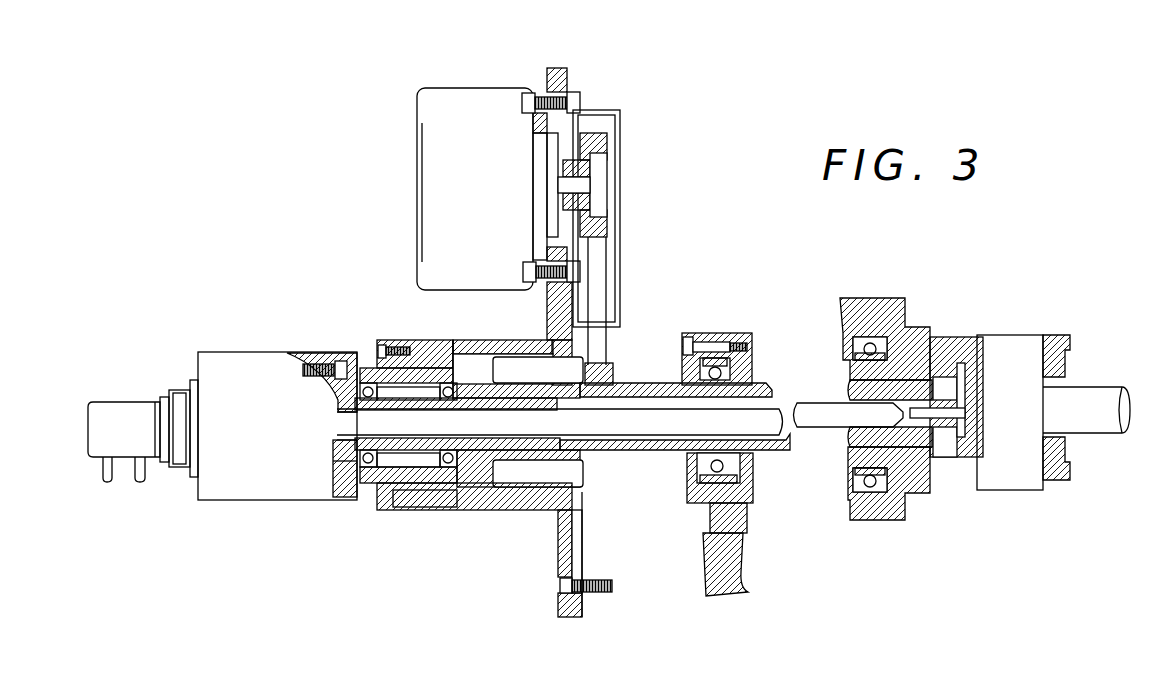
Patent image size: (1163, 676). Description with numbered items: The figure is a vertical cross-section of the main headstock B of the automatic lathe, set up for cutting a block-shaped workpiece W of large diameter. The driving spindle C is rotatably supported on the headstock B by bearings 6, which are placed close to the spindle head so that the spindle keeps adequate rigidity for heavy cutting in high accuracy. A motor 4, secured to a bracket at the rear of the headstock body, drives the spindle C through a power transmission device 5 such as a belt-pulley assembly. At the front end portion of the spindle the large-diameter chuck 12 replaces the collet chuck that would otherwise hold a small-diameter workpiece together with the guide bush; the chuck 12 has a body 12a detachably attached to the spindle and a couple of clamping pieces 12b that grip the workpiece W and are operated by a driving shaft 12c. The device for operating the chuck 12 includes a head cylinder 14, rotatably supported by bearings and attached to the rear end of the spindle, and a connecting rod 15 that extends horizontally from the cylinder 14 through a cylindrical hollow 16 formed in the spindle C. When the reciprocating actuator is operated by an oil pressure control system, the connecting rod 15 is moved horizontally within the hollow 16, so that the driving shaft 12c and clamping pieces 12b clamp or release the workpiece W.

The motor 4 is at (426, 177).
The power transmission device 5 is at (605, 290).
The bearing 6 is at (369, 404).
The chuck 12 is at (1009, 407).
The chuck body 12a is at (1024, 420).
The clamping pieces 12b is at (1068, 480).
The driving shaft 12c is at (975, 424).
The head cylinder 14 is at (134, 396).
The connecting rod 15 is at (620, 421).
The cylindrical hollow 16 is at (786, 437).
The main headstock B is at (408, 336).
The driving spindle C is at (652, 451).
The workpiece W is at (1103, 420).